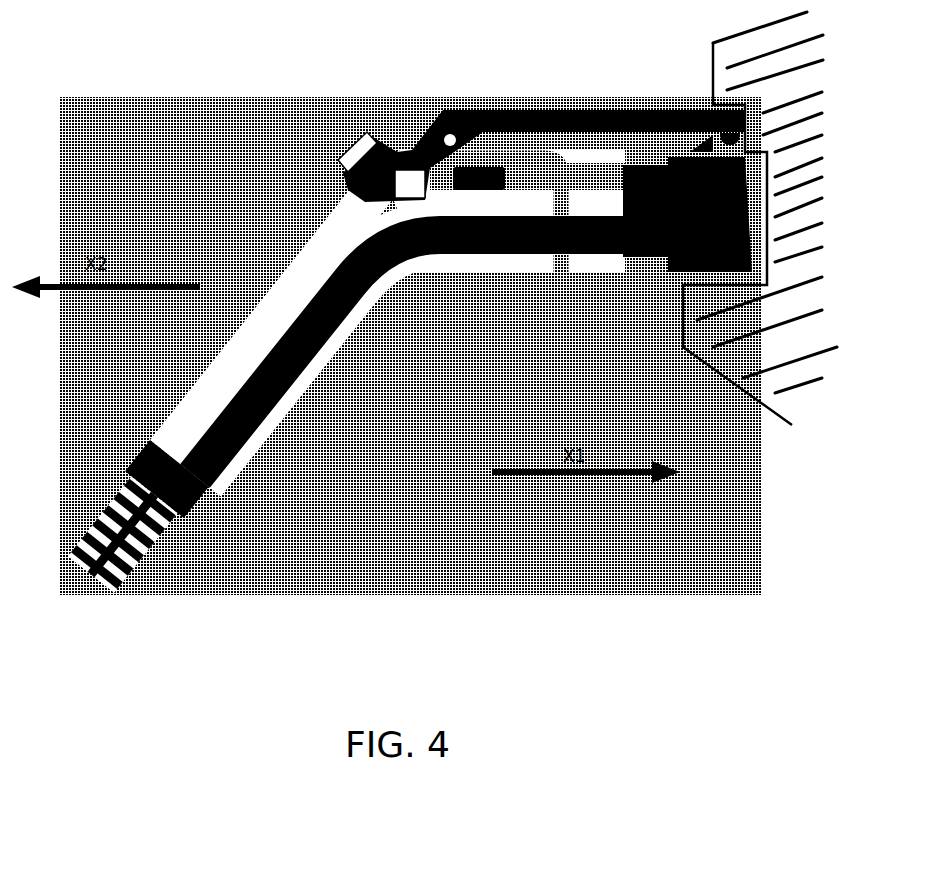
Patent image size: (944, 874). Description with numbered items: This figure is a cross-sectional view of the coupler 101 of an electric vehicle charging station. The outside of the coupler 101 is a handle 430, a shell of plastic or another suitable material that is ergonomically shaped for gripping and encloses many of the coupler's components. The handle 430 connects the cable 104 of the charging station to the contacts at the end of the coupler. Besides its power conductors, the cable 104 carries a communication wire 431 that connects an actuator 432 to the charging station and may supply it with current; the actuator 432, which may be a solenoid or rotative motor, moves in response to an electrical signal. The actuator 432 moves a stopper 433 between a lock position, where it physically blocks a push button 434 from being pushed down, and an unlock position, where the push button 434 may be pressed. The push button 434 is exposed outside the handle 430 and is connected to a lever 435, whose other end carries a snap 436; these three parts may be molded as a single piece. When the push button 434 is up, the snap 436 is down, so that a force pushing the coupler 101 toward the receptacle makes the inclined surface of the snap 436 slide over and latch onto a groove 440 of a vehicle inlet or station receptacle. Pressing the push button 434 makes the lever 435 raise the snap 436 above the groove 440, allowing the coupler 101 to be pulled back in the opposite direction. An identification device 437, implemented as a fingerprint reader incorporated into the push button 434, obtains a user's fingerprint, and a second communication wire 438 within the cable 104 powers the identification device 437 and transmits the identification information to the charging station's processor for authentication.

The coupler 101 is at (141, 35).
The cable 104 is at (287, 380).
The handle 430 is at (325, 270).
The communication wire 431 is at (527, 183).
The actuator 432 is at (467, 178).
The stopper 433 is at (410, 186).
The push button 434 is at (345, 178).
The lever 435 is at (553, 121).
The snap 436 is at (722, 133).
The identification device 437 is at (342, 152).
The second communication wire 438 is at (585, 272).
The groove 440 is at (700, 150).